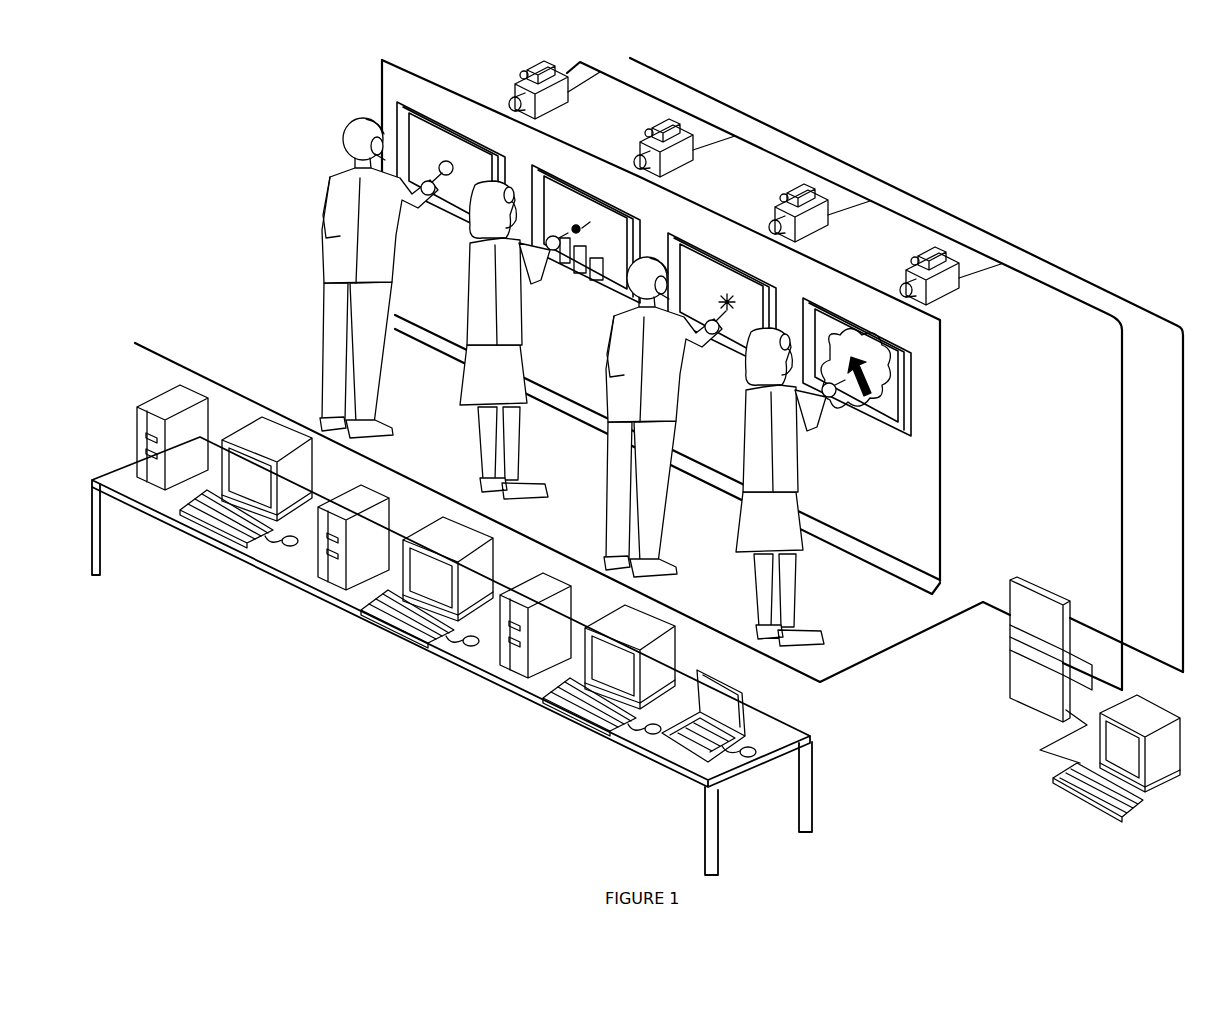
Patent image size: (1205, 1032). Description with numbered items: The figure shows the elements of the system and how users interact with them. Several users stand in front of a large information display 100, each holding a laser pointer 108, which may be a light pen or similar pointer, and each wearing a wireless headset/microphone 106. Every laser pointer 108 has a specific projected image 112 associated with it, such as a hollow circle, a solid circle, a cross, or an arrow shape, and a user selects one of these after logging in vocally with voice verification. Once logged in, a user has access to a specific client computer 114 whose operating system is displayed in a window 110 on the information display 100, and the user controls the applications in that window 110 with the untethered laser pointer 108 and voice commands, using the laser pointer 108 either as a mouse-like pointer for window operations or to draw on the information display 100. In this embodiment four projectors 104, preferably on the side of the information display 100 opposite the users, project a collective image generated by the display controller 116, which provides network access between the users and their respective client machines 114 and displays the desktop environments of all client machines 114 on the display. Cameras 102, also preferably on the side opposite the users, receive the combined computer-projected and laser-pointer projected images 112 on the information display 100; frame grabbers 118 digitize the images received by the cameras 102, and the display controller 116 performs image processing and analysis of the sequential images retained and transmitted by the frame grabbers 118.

The information display 100 is at (375, 78).
The cameras 102 is at (528, 64).
The projectors 104 is at (568, 112).
The wireless headset/microphone 106 is at (395, 157).
The laser pointer 108 is at (441, 188).
The window 110 is at (438, 113).
The projected image 112 is at (457, 162).
The client computer 114 is at (171, 494).
The display controller 116 is at (1034, 578).
The frame grabbers 118 is at (1041, 652).